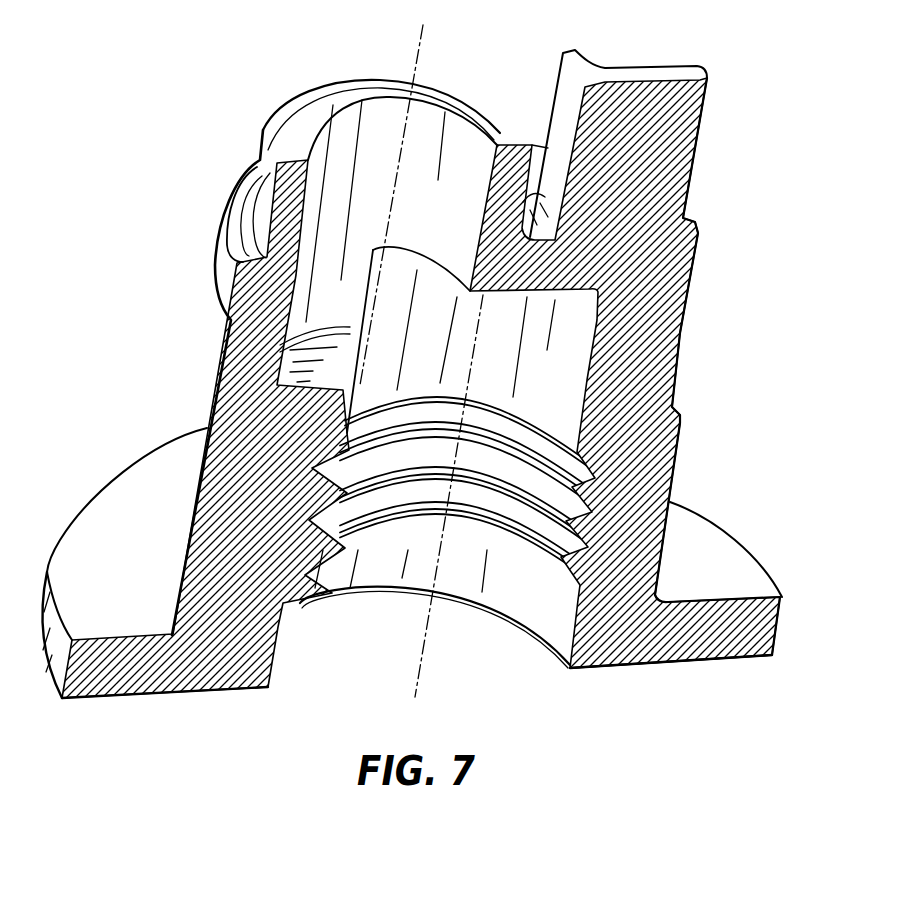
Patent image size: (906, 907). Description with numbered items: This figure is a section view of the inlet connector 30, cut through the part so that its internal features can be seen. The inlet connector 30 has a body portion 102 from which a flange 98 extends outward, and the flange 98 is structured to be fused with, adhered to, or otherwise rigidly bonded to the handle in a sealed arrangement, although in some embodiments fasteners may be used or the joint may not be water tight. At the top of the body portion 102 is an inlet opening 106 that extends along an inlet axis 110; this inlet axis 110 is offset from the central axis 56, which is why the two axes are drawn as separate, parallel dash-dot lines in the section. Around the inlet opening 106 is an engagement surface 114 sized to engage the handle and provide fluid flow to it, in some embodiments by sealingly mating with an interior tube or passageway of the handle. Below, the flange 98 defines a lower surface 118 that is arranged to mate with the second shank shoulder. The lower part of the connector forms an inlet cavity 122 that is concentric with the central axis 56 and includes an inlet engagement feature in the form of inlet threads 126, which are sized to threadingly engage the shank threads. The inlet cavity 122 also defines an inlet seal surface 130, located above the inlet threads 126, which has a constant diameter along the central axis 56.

The inlet connector 30 is at (146, 260).
The central axis 56 is at (422, 638).
The flange 98 is at (108, 503).
The body portion 102 is at (655, 450).
The inlet opening 106 is at (460, 160).
The inlet axis 110 is at (410, 70).
The engagement surface 114 is at (262, 183).
The lower surface 118 is at (220, 697).
The inlet cavity 122 is at (543, 607).
The inlet threads 126 is at (543, 452).
The inlet seal surface 130 is at (343, 427).